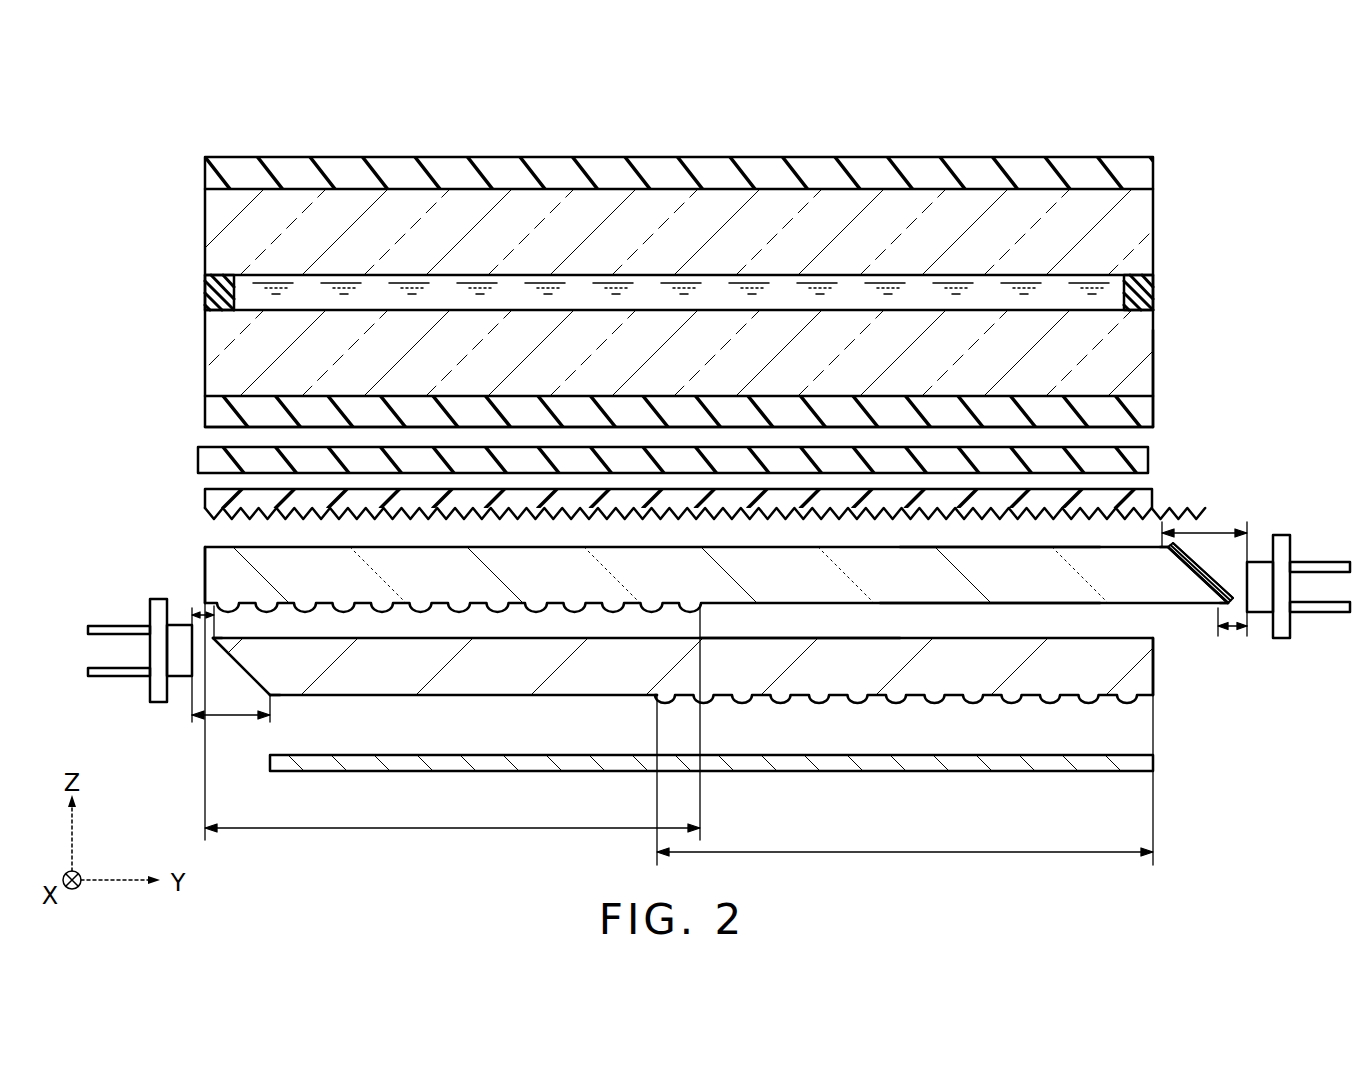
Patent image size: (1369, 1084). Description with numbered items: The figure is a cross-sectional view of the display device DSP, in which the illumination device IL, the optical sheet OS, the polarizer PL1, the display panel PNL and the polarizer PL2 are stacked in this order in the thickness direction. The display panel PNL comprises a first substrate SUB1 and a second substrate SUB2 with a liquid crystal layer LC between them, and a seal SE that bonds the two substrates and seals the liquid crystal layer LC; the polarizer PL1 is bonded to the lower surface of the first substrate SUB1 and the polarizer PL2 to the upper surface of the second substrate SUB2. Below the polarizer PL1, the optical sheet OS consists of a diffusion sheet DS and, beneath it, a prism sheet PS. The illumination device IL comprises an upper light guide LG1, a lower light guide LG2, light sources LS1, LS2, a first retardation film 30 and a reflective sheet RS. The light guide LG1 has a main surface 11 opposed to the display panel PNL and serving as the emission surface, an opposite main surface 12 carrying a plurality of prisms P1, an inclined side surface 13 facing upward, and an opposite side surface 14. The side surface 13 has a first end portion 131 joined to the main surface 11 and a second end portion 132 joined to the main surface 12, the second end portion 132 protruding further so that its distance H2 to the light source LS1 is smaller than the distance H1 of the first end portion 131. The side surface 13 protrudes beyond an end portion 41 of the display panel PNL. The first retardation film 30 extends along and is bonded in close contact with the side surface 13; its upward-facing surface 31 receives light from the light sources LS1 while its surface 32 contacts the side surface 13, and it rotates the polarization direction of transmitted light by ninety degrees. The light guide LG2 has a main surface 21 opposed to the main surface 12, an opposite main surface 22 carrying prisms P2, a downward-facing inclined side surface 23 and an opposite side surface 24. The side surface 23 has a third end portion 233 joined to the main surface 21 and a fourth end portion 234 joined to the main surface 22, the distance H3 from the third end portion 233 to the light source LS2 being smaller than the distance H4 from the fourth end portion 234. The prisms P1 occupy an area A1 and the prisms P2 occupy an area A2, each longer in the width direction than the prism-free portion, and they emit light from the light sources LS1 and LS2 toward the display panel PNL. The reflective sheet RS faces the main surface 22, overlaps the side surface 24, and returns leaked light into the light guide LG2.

The display device DSP is at (128, 127).
The display panel PNL is at (160, 272).
The illumination device IL is at (97, 462).
The liquid crystal layer LC is at (1057, 290).
The polarizer PL2 is at (1142, 173).
The second substrate SUB2 is at (1146, 223).
The seal SE is at (1150, 290).
The first substrate SUB1 is at (1146, 334).
The end portion 41 is at (1158, 379).
The polarizer PL1 is at (1146, 406).
The optical sheet OS is at (1214, 440).
The diffusion sheet DS is at (1143, 461).
The prism sheet PS is at (1147, 497).
The light guide LG1 is at (265, 553).
The main surface 11 is at (968, 541).
The main surface 12 is at (958, 612).
The side surface 13 is at (1172, 553).
The first end portion 131 is at (1160, 541).
The second end portion 132 is at (1219, 608).
The side surface 14 is at (205, 563).
The prisms P1 is at (533, 607).
The first retardation film 30 is at (1231, 602).
The surface 31 is at (1178, 552).
The surface 32 is at (1193, 588).
The light guide LG2 is at (862, 646).
The main surface 21 is at (783, 633).
The main surface 22 is at (420, 698).
The side surface 23 is at (225, 645).
The third end portion 233 is at (217, 633).
The fourth end portion 234 is at (273, 700).
The side surface 24 is at (1157, 668).
The prisms P2 is at (940, 698).
The reflective sheet RS is at (1148, 765).
The light source LS1 is at (1285, 562).
The light source LS2 is at (132, 626).
The distance H1 is at (1204, 571).
The distance H2 is at (1232, 635).
The distance H3 is at (205, 614).
The distance H4 is at (231, 722).
The area A1 is at (452, 721).
The area A2 is at (905, 780).